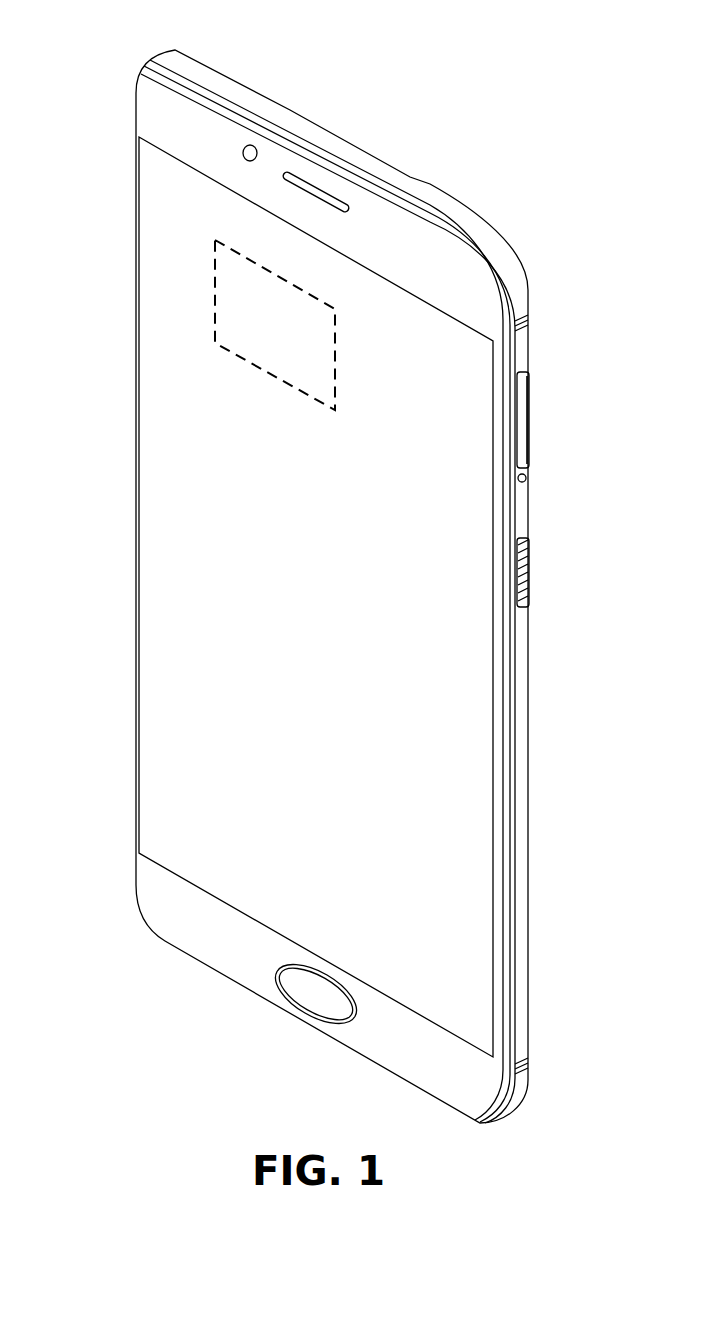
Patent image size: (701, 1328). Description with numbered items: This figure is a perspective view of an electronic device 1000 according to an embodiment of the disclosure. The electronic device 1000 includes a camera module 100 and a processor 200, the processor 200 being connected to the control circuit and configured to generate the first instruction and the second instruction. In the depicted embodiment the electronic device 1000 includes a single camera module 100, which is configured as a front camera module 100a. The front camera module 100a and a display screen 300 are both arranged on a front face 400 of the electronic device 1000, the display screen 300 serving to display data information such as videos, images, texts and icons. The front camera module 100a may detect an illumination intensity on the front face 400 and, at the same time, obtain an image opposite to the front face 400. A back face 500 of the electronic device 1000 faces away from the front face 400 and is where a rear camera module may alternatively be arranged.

The camera module 100 is at (350, 56).
The front camera module 100a is at (246, 144).
The processor 200 is at (215, 298).
The display screen 300 is at (163, 411).
The front face 400 is at (146, 727).
The back face 500 is at (540, 789).
The electronic device 1000 is at (98, 565).